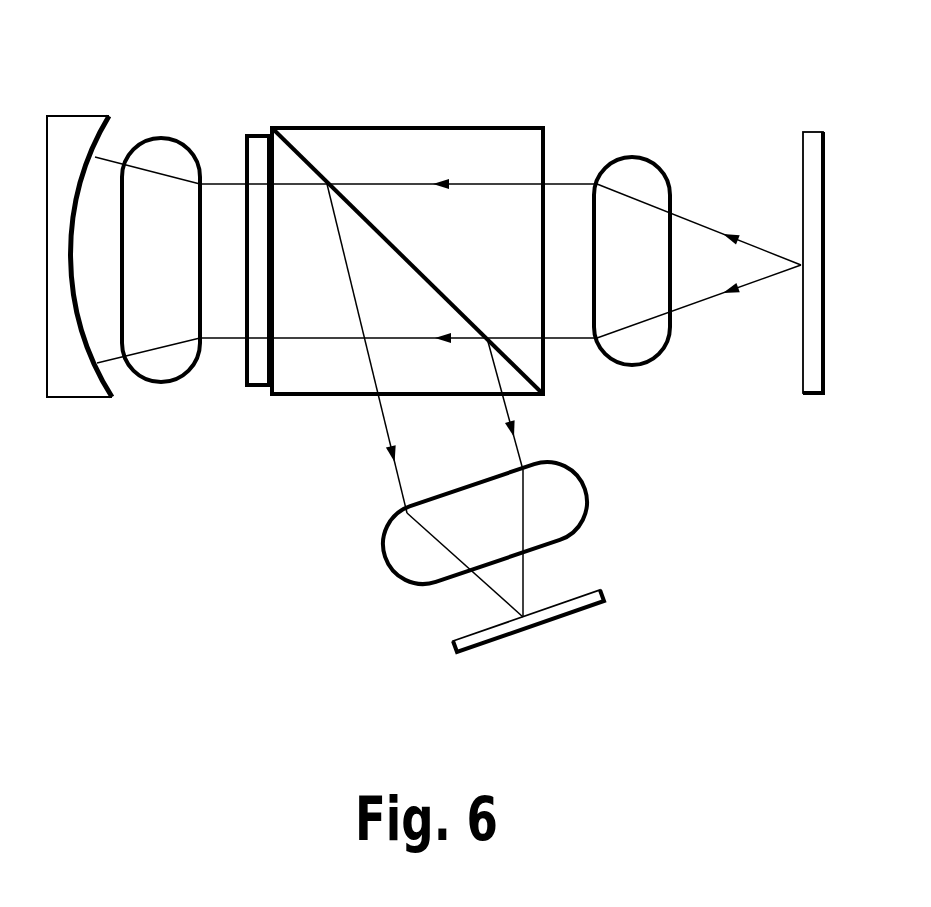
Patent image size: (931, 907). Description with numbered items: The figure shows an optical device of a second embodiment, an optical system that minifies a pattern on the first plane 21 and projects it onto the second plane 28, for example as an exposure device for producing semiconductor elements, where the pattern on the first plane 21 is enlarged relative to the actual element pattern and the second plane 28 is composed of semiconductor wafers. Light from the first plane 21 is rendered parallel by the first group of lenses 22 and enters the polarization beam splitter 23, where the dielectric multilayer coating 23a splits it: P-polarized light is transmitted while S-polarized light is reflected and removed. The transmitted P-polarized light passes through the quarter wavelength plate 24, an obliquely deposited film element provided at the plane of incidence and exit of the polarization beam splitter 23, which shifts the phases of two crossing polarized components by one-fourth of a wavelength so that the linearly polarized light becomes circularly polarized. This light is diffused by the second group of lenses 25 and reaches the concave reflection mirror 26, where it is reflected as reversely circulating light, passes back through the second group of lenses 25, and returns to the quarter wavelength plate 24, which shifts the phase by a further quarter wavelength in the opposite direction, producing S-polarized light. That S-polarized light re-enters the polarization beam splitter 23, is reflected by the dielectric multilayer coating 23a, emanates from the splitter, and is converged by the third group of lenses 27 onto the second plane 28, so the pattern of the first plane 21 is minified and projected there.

The first plane 21 is at (808, 132).
The first group of lenses 22 is at (637, 155).
The polarization beam splitter 23 is at (450, 127).
The dielectric multilayer coating 23a is at (312, 167).
The quarter wavelength plate 24 is at (257, 135).
The second group of lenses 25 is at (163, 138).
The concave reflection mirror 26 is at (80, 115).
The third group of lenses 27 is at (587, 487).
The second plane 28 is at (605, 595).